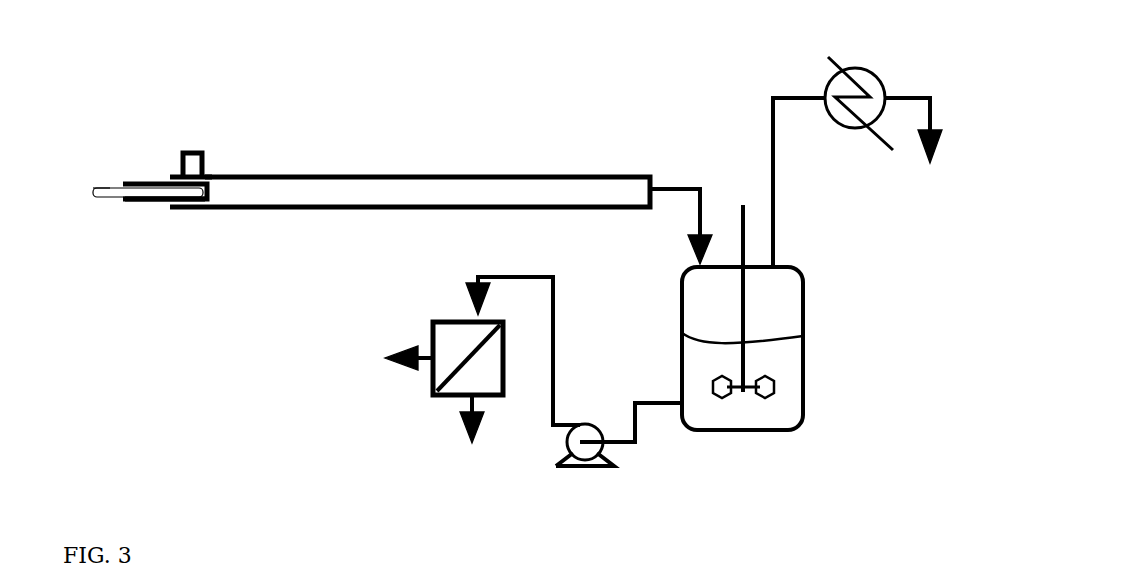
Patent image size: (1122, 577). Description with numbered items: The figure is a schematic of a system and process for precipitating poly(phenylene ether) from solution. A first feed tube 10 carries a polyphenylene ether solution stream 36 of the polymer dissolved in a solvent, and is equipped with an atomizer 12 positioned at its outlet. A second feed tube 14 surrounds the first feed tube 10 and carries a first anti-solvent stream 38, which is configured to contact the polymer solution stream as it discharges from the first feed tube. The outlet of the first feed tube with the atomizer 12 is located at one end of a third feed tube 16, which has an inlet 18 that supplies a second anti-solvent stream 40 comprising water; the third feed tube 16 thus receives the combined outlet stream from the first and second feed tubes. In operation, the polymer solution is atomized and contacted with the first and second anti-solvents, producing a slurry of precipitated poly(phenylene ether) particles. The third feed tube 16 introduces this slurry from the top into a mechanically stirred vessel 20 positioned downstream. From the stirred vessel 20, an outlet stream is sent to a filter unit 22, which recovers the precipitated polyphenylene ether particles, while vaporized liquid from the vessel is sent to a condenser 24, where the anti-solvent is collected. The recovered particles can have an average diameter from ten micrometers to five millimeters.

The first feed tube 10 is at (102, 187).
The atomizer 12 is at (212, 177).
The second feed tube 14 is at (143, 178).
The third feed tube 16 is at (353, 167).
The inlet 18 is at (193, 150).
The mechanically stirred vessel 20 is at (803, 320).
The filter unit 22 is at (433, 322).
The condenser 24 is at (830, 83).
The polyphenylene ether solution stream 36 is at (117, 193).
The first anti-solvent stream 38 is at (158, 201).
The second anti-solvent stream 40 is at (240, 192).